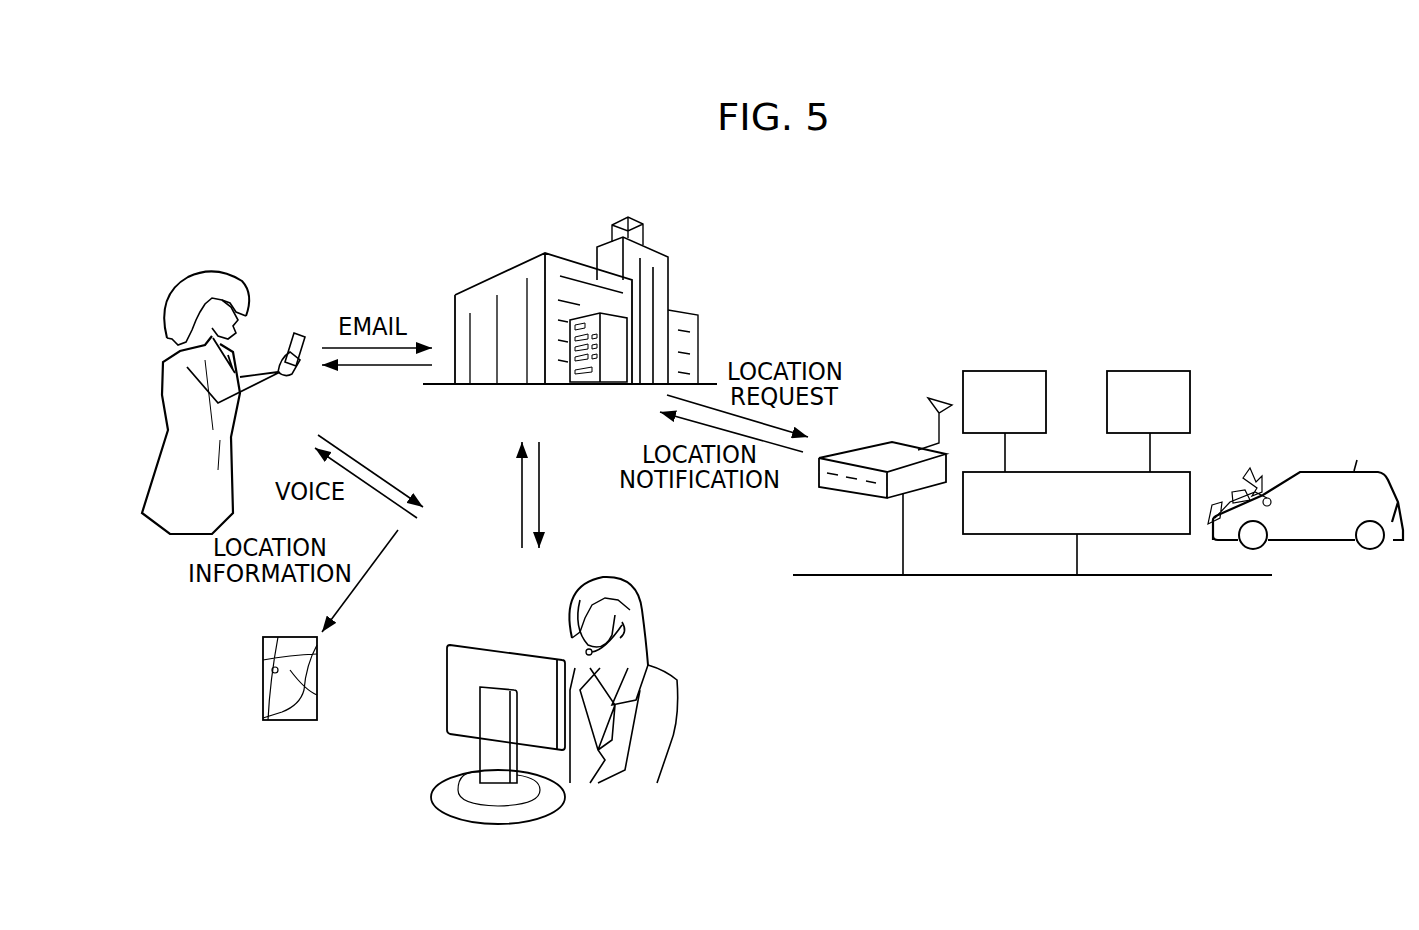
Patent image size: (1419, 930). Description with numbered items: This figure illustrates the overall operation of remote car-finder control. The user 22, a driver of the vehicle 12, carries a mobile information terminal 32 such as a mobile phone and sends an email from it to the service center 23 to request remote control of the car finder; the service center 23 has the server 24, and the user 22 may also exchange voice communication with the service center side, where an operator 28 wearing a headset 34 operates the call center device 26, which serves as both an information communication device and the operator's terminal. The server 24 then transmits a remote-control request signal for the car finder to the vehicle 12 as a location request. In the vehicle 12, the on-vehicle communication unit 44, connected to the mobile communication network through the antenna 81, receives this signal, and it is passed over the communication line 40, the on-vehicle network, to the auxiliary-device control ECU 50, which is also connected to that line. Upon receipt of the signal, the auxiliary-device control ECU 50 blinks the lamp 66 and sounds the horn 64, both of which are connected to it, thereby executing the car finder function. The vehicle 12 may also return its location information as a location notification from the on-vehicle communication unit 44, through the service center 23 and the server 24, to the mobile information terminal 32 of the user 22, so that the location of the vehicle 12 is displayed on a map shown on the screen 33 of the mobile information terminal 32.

The vehicle 12 is at (1325, 486).
The user 22 is at (219, 281).
The service center 23 is at (498, 282).
The server 24 is at (614, 366).
The call center device 26 is at (455, 697).
The operator 28 is at (657, 728).
The mobile information terminal 32 is at (297, 340).
The screen 33 is at (290, 644).
The headset 34 is at (586, 652).
The communication line 40 is at (823, 573).
The on-vehicle communication unit 44 is at (887, 452).
The auxiliary-device control ECU 50 is at (1073, 470).
The horn 64 is at (1147, 370).
The lamp 66 is at (1002, 370).
The antenna 81 is at (930, 398).